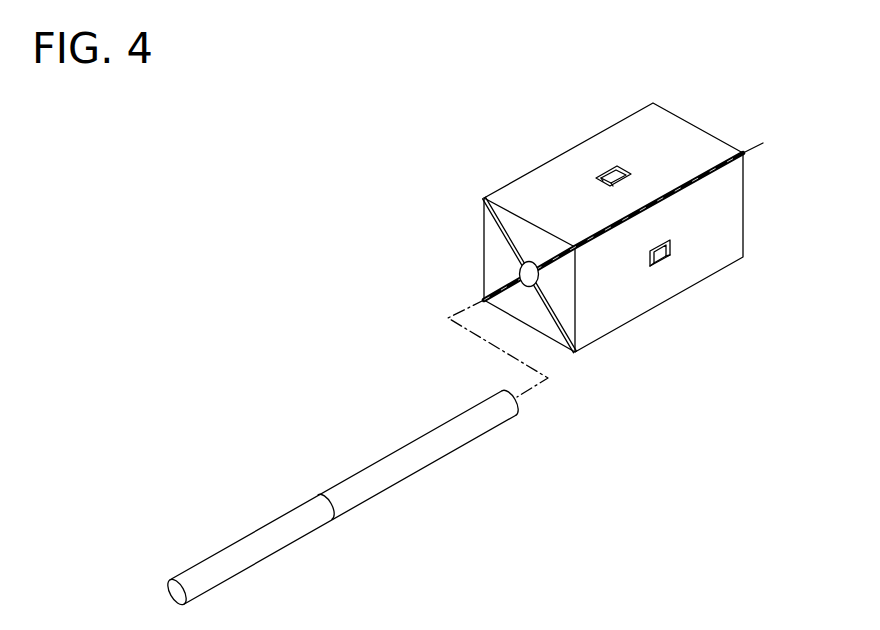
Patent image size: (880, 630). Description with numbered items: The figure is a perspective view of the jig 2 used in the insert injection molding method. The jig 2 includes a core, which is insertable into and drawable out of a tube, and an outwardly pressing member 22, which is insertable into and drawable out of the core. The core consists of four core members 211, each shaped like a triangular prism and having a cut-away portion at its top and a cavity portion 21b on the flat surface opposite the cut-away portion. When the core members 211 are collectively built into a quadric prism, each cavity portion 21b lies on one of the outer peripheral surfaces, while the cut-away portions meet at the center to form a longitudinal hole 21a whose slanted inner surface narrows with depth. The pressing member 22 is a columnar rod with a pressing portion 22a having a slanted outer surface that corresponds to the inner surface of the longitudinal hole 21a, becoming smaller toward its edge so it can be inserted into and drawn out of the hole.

The jig 2 is at (289, 127).
The core member 211 is at (553, 173).
The longitudinal hole 21a is at (511, 269).
The cavity portion 21b is at (605, 168).
The outwardly pressing member 22 is at (341, 498).
The pressing portion 22a is at (407, 463).